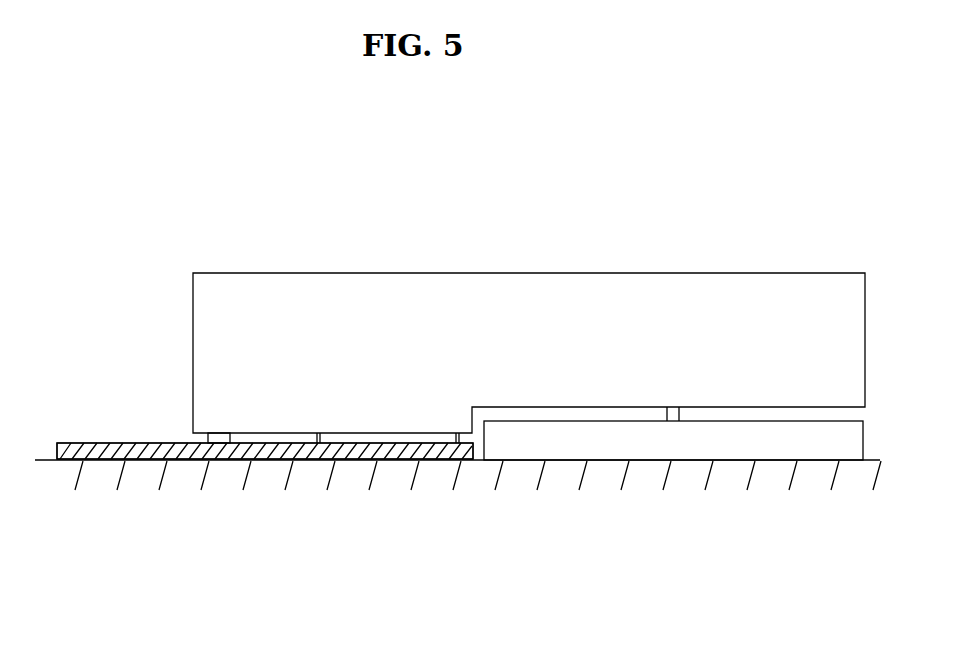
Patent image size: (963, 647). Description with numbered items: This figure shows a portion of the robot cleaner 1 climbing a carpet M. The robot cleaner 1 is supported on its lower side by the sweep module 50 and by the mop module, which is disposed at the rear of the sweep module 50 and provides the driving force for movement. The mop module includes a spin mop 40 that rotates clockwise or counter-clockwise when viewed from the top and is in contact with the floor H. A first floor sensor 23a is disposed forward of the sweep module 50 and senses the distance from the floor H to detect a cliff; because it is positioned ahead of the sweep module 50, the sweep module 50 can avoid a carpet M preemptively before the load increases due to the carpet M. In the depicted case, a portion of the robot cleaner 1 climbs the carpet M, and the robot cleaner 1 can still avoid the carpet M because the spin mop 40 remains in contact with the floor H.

The robot cleaner 1 is at (503, 262).
The spin mop 40 is at (642, 430).
The sweep module 50 is at (393, 435).
The carpet M is at (75, 443).
The first floor sensor 23a is at (213, 437).
The floor H is at (45, 462).